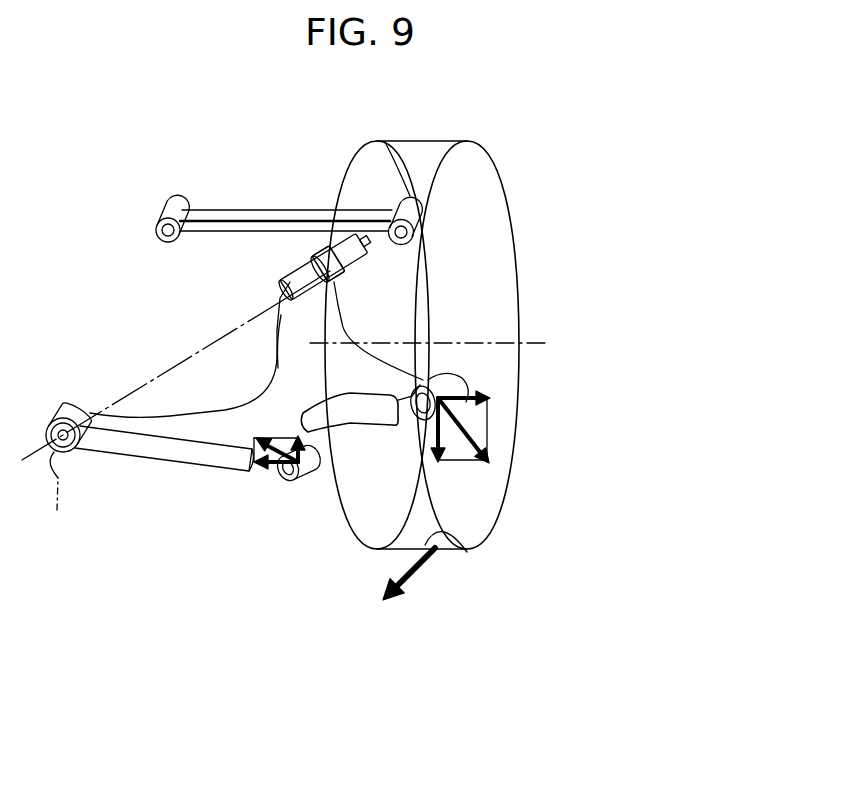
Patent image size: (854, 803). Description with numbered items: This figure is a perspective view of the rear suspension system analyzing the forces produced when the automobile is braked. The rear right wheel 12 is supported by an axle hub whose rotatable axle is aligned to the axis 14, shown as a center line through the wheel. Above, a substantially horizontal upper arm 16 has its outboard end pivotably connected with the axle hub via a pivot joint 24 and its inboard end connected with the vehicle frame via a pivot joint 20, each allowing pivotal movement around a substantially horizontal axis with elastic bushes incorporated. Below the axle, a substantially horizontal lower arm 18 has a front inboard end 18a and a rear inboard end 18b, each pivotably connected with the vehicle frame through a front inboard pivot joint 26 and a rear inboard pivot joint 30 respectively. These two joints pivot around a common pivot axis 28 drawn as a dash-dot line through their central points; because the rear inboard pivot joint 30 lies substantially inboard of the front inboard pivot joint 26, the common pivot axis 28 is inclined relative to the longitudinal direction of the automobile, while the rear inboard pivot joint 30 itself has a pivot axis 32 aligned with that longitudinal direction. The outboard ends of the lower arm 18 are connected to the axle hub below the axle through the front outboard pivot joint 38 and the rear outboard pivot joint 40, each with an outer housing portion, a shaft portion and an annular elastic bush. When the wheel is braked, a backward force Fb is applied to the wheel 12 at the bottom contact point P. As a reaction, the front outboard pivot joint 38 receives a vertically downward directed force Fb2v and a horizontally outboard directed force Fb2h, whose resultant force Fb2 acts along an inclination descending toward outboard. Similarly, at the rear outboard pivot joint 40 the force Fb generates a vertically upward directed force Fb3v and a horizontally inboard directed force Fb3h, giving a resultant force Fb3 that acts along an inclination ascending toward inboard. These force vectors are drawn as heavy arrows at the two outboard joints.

The rear right wheel 12 is at (503, 475).
The axis 14 is at (505, 332).
The upper arm 16 is at (252, 211).
The lower arm 18 is at (250, 402).
The front inboard end 18a is at (296, 286).
The rear inboard end 18b is at (130, 428).
The pivot joint 20 is at (176, 200).
The pivot joint 24 is at (408, 198).
The front inboard pivot joint 26 is at (328, 249).
The common pivot axis 28 is at (217, 340).
The rear inboard pivot joint 30 is at (68, 400).
The pivot axis 32 is at (65, 499).
The front outboard pivot joint 38 is at (442, 392).
The rear outboard pivot joint 40 is at (294, 483).
The backward force Fb is at (428, 560).
The resultant force Fb2 is at (491, 442).
The horizontally outboard directed force Fb2h is at (493, 402).
The vertically downward directed force Fb2v is at (466, 462).
The resultant force Fb3 is at (232, 476).
The horizontally inboard directed force Fb3h is at (270, 478).
The vertically upward directed force Fb3v is at (308, 450).
The tire ground contact point P is at (467, 548).